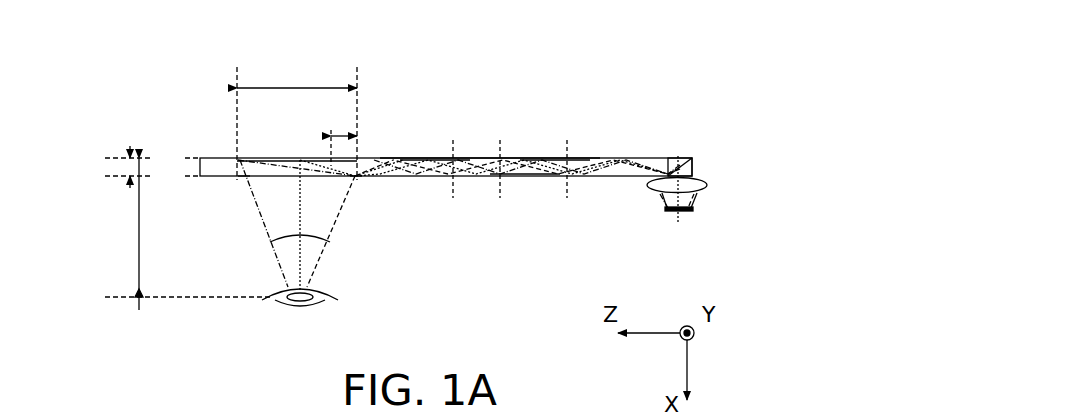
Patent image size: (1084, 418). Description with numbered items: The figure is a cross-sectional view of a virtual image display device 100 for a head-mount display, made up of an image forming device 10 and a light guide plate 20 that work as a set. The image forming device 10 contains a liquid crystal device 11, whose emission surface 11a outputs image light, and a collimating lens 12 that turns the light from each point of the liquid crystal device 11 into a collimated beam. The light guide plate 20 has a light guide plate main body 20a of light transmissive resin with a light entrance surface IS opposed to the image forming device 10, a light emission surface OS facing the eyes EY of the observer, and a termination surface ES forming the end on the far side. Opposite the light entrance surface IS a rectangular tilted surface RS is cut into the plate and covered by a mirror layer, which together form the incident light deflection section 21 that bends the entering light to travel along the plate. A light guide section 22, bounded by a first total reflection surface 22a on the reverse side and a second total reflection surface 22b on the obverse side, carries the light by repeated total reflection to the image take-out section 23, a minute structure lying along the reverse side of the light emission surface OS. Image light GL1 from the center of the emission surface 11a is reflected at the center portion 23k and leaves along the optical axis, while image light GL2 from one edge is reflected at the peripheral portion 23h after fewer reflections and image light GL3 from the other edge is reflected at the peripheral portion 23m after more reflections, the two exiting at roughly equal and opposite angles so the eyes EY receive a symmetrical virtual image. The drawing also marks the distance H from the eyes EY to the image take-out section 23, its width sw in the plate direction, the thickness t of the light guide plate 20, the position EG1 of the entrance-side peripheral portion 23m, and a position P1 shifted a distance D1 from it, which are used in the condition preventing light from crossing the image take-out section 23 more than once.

The virtual image display device 100 is at (706, 56).
The image forming device 10 is at (726, 207).
The liquid crystal device 11 is at (717, 225).
The emission surface 11a is at (697, 206).
The collimating lens 12 is at (706, 186).
The light guide plate 20 is at (532, 93).
The light guide plate main body 20a is at (492, 158).
The incident light deflection section 21 is at (745, 142).
The light guide section 22 is at (432, 158).
The first total reflection surface 22a is at (552, 158).
The second total reflection surface 22b is at (520, 178).
The image take-out section 23 is at (270, 158).
The peripheral portion 23h is at (246, 178).
The center portion 23k is at (292, 158).
The peripheral portion 23m is at (364, 178).
The tilted surface RS is at (674, 158).
The light entrance surface IS is at (668, 200).
The light emission surface OS is at (262, 200).
The termination surface ES is at (200, 168).
The position EG1 is at (358, 158).
The position P1 is at (331, 158).
The eyes EY is at (330, 297).
The image light GL1 is at (633, 158).
The image light GL2 is at (488, 178).
The image light GL3 is at (652, 176).
The width sw is at (300, 88).
The distance D1 is at (340, 136).
The thickness t is at (120, 154).
The distance H is at (139, 272).